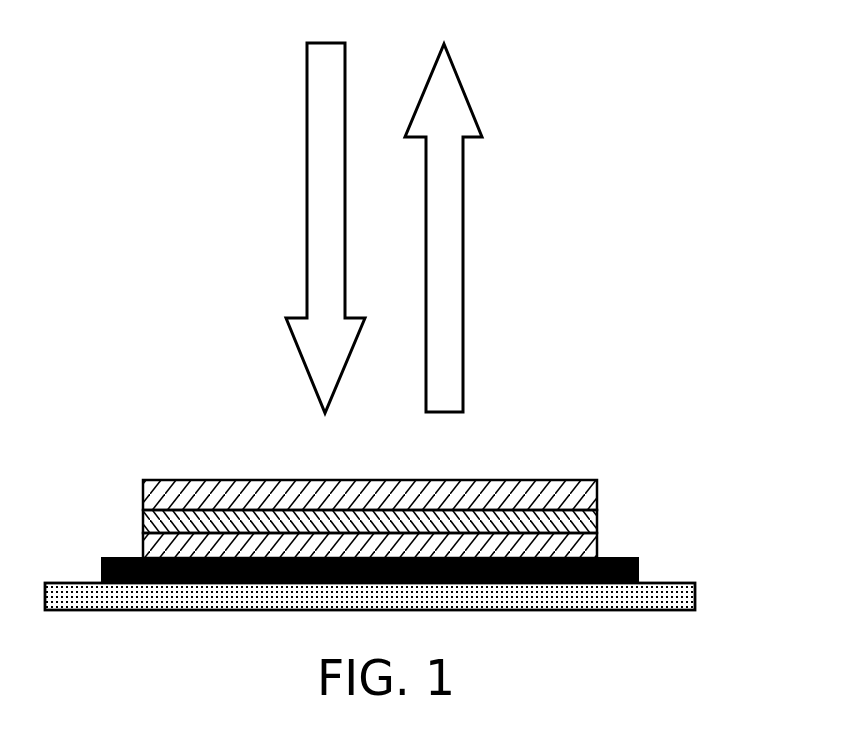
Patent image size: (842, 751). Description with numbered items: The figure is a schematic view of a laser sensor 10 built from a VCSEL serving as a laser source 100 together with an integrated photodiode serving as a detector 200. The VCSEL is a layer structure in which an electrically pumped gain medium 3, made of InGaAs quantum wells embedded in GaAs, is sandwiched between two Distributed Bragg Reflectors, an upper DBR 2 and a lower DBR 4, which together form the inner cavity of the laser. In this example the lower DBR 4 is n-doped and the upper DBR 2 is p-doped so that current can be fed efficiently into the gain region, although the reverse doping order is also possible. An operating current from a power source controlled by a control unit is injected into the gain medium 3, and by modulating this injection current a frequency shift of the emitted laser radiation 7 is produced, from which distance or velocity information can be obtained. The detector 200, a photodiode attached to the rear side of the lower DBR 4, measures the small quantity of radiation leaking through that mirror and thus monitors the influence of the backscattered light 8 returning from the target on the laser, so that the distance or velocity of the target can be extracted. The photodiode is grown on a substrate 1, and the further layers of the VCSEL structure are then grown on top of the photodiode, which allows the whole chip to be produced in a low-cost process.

The substrate 1 is at (695, 597).
The upper DBR 2 is at (597, 495).
The gain medium 3 is at (143, 522).
The lower DBR 4 is at (597, 548).
The emitted laser radiation 7 is at (464, 247).
The backscattered light 8 is at (306, 206).
The laser sensor 10 is at (164, 382).
The laser source 100 is at (442, 519).
The detector 200 is at (102, 568).